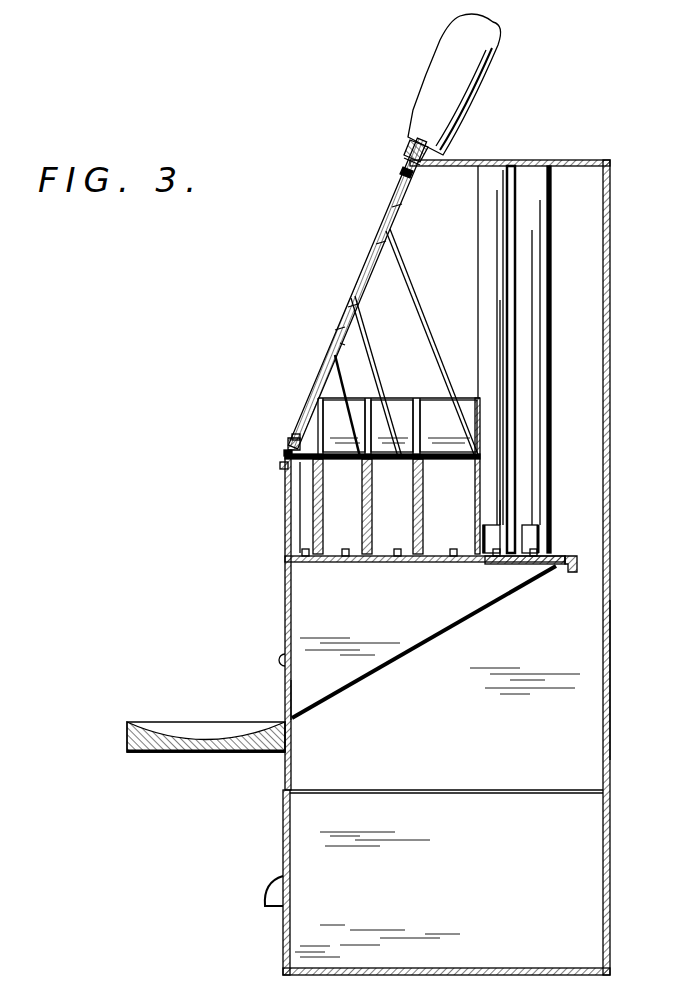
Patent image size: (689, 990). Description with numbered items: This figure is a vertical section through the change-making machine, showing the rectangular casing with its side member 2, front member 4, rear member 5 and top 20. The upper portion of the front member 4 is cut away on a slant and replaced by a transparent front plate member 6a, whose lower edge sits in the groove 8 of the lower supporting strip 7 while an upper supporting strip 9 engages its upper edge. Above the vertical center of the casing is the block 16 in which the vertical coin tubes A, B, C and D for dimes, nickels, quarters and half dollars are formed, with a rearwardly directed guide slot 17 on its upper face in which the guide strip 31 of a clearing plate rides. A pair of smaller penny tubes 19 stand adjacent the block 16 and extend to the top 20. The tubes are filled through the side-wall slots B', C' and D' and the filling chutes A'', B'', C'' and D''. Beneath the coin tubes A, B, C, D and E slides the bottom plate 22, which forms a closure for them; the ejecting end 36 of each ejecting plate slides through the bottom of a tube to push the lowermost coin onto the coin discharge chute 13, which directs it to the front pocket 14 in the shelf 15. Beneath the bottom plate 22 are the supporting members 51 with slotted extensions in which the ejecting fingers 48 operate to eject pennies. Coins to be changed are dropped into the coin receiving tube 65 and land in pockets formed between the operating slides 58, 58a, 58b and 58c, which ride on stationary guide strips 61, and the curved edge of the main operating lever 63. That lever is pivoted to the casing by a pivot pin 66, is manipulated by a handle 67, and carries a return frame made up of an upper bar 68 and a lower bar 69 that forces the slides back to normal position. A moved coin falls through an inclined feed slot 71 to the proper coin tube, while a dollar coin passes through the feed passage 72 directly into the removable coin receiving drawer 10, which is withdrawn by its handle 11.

The side member 2 is at (590, 656).
The front member 4 is at (284, 696).
The rear member 5 is at (610, 708).
The lower supporting strip 7 is at (280, 452).
The groove 8 is at (289, 440).
The upper supporting strip 9 is at (404, 163).
The coin receiving drawer 10 is at (280, 860).
The handle 11 is at (268, 904).
The coin discharge chute 13 is at (466, 623).
The front pocket 14 is at (176, 732).
The shelf 15 is at (172, 755).
The block 16 is at (473, 504).
The guide slot 17 is at (302, 474).
The penny tubes 19 is at (512, 346).
The top 20 is at (533, 162).
The bottom plate 22 is at (350, 563).
The guide strip 31 is at (348, 452).
The ejecting end 36 is at (305, 565).
The ejecting fingers 48 is at (545, 552).
The supporting members 51 is at (520, 566).
The operating slide 58 is at (291, 438).
The operating slide 58a is at (350, 306).
The operating slide 58b is at (378, 243).
The operating slide 58c is at (394, 205).
The transparent front plate member 6a is at (336, 330).
The guide strips 61 is at (390, 233).
The main operating lever 63 is at (283, 603).
The coin receiving tube 65 is at (408, 150).
The pivot pin 66 is at (281, 661).
The handle 67 is at (472, 116).
The upper bar 68 is at (402, 172).
The lower bar 69 is at (283, 466).
The inclined feed slot 71 is at (420, 306).
The feed passage 72 is at (459, 282).
The dime tube A is at (265, 507).
The nickel tube B is at (334, 521).
The quarter tube C is at (386, 518).
The half dollar tube D is at (439, 518).
The coin tube E is at (548, 266).
The dime filling chute A'' is at (263, 423).
The nickel filling chute B'' is at (320, 394).
The quarter filling chute C'' is at (376, 369).
The half dollar filling chute D'' is at (432, 343).
The nickel slot B' is at (344, 412).
The quarter slot C' is at (392, 406).
The half dollar slot D' is at (448, 399).